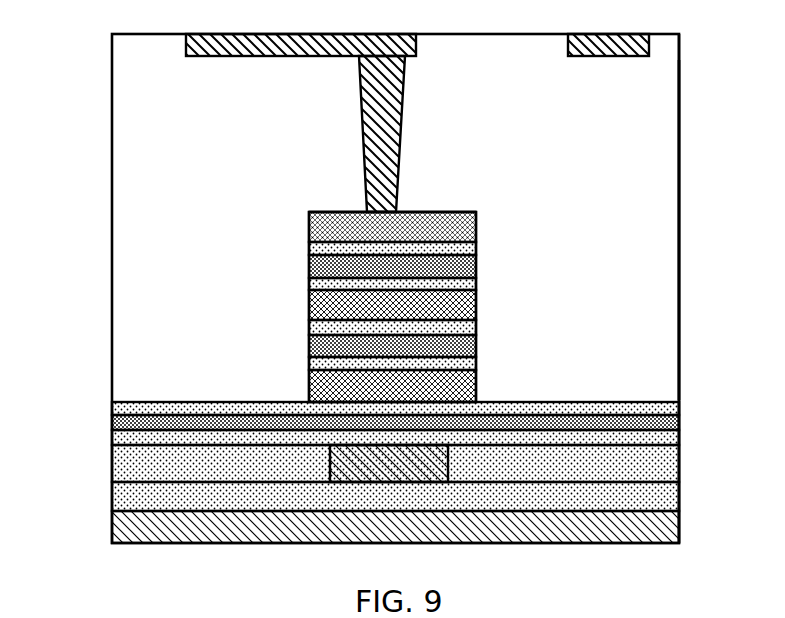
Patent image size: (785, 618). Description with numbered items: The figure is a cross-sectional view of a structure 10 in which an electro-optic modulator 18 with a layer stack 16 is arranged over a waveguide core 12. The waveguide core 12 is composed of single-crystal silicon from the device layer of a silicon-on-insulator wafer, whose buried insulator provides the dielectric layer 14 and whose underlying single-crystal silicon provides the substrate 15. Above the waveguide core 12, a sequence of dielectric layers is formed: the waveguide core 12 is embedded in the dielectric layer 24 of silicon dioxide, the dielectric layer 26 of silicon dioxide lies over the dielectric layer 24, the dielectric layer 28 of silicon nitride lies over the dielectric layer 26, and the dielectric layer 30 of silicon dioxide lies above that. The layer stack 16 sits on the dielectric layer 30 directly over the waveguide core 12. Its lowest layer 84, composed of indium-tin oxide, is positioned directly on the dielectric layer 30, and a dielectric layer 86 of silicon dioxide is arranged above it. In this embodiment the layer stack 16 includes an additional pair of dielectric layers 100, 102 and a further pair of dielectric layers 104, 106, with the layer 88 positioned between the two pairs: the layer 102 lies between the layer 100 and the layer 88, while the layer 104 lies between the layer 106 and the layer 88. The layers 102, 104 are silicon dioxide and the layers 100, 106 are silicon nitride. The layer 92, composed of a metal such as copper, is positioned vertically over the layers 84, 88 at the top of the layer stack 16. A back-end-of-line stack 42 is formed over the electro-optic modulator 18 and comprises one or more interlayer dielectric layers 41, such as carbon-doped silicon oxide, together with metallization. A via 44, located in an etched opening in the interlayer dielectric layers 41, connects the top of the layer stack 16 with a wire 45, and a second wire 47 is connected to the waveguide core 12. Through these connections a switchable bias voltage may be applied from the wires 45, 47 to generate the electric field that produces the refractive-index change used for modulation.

The structure 10 is at (95, 153).
The waveguide core 12 is at (350, 453).
The dielectric layer 14 is at (660, 503).
The substrate 15 is at (660, 528).
The layer stack 16 is at (478, 218).
The electro-optic modulator 18 is at (499, 178).
The dielectric layer 24 is at (655, 456).
The dielectric layer 26 is at (150, 437).
The dielectric layer 28 is at (660, 422).
The dielectric layer 30 is at (150, 407).
The interlayer dielectric layer 41 is at (660, 289).
The back-end-of-line stack 42 is at (681, 173).
The via 44 is at (402, 99).
The wire 45 is at (417, 46).
The wire 47 is at (568, 42).
The layer 84 is at (322, 390).
The layer 86 is at (465, 366).
The layer 88 is at (465, 250).
The layer 92 is at (322, 224).
The dielectric layer 100 is at (322, 346).
The dielectric layer 102 is at (465, 328).
The dielectric layer 104 is at (465, 284).
The dielectric layer 106 is at (322, 267).